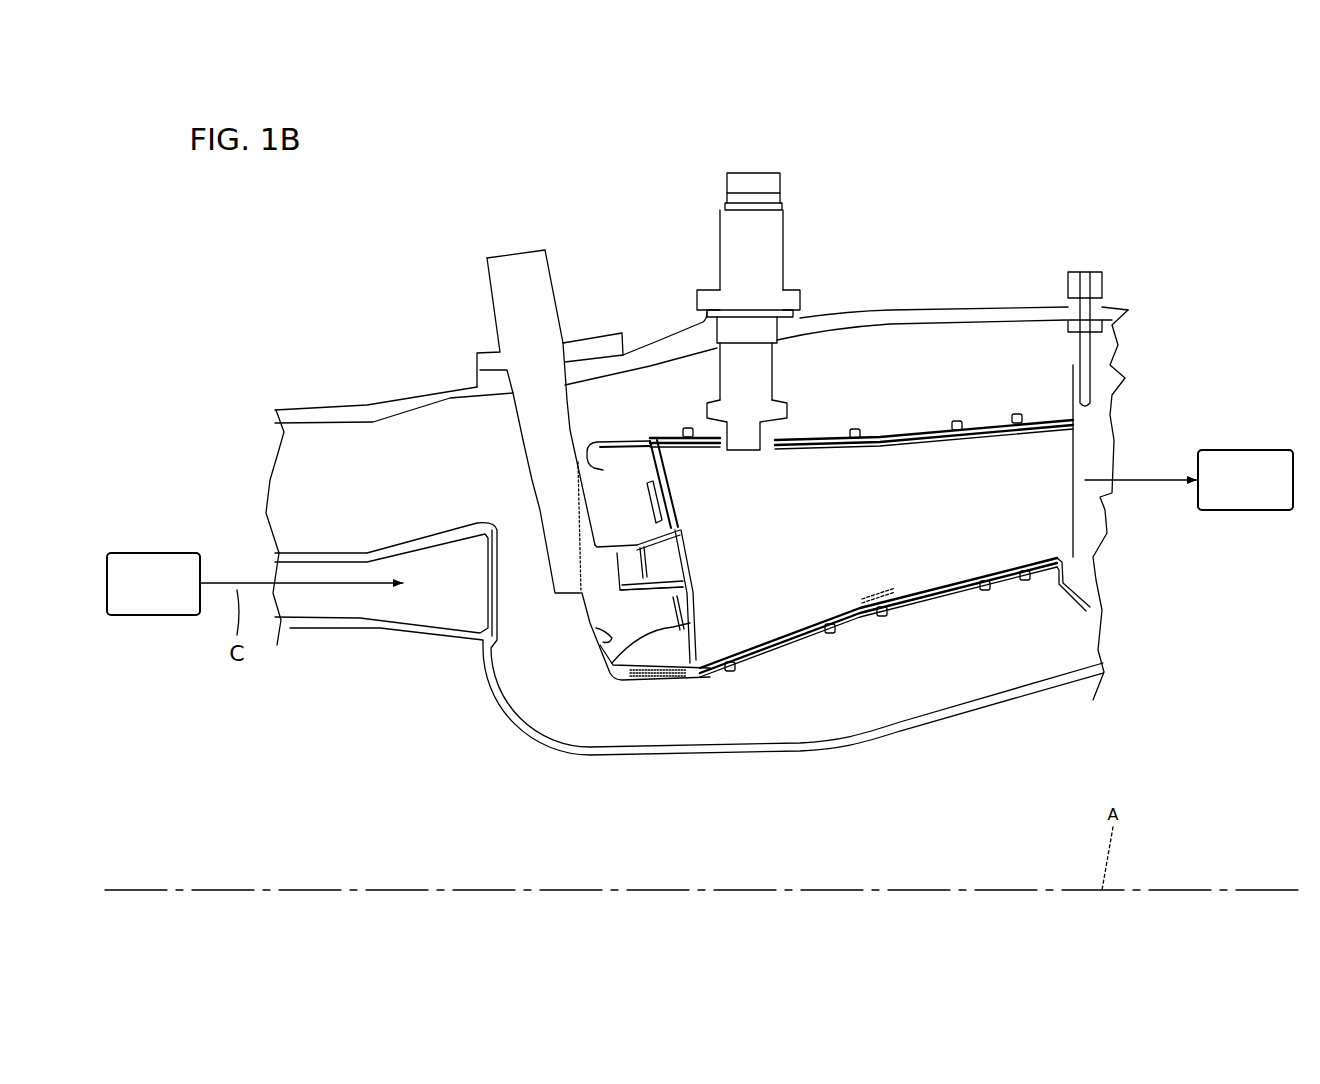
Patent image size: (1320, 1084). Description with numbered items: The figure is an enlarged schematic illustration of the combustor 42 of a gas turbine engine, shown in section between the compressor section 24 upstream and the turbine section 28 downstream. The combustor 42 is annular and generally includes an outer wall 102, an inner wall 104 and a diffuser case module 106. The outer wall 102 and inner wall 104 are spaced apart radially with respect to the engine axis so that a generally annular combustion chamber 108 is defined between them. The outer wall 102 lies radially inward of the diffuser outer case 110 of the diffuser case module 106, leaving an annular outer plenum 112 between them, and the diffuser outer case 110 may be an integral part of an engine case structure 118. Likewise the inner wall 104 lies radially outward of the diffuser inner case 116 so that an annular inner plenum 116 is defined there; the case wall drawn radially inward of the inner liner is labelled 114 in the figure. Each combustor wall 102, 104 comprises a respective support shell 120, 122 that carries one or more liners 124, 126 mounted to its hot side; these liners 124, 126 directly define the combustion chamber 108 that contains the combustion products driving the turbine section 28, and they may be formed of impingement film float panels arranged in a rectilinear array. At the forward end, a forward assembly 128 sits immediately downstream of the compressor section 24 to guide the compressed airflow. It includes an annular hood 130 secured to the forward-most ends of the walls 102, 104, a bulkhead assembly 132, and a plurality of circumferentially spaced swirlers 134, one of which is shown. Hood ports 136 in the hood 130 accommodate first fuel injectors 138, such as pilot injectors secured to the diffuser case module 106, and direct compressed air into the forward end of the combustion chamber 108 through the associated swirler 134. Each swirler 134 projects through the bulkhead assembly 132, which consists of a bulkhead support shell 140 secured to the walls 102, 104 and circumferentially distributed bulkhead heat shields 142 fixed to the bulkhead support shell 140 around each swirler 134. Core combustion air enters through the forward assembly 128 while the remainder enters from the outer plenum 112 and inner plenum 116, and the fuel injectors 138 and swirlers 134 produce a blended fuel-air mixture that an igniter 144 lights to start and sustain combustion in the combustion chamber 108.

The compressor section 24 is at (255, 584).
The turbine section 28 is at (1189, 480).
The combustor 42 is at (1002, 217).
The outer wall 102 is at (908, 418).
The inner wall 104 is at (860, 636).
The diffuser case module 106 is at (903, 307).
The combustion chamber 108 is at (853, 529).
The diffuser outer case 110 is at (452, 387).
The annular outer plenum 112 is at (806, 382).
The inner shell 114 is at (767, 760).
The diffuser inner case 116 is at (779, 717).
The engine case structure 118 is at (403, 410).
The support shell 120 is at (878, 438).
The support shell 122 is at (948, 603).
The liner 124 is at (783, 455).
The liner 126 is at (957, 570).
The forward assembly 128 is at (597, 690).
The annular hood 130 is at (600, 652).
The bulkhead assembly 132 is at (678, 497).
The swirler 134 is at (697, 593).
The hood port 136 is at (600, 632).
The first fuel injector 138 is at (506, 332).
The bulkhead support shell 140 is at (605, 673).
The bulkhead heat shield 142 is at (693, 620).
The igniter 144 is at (727, 270).